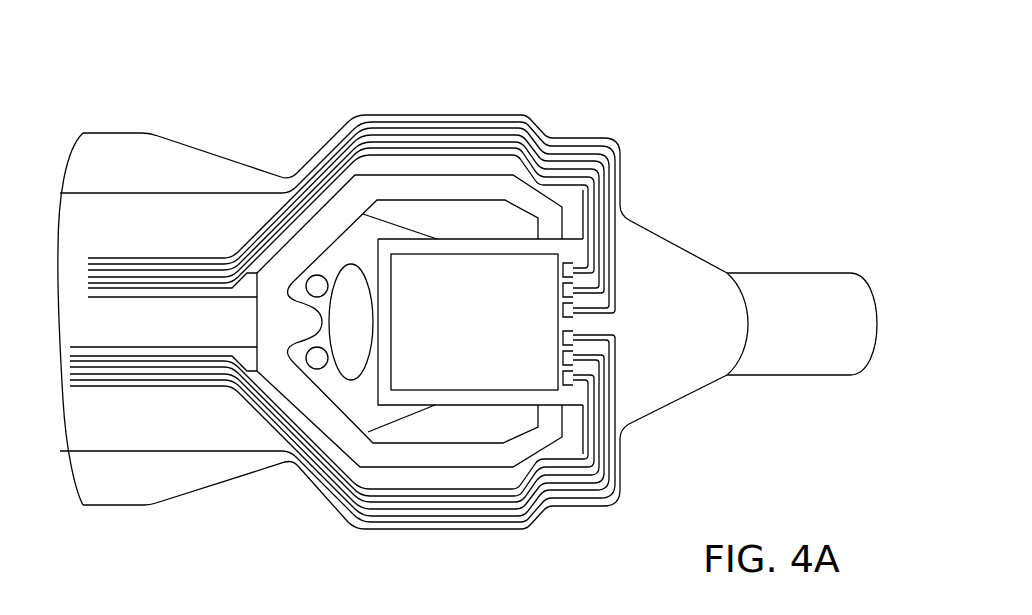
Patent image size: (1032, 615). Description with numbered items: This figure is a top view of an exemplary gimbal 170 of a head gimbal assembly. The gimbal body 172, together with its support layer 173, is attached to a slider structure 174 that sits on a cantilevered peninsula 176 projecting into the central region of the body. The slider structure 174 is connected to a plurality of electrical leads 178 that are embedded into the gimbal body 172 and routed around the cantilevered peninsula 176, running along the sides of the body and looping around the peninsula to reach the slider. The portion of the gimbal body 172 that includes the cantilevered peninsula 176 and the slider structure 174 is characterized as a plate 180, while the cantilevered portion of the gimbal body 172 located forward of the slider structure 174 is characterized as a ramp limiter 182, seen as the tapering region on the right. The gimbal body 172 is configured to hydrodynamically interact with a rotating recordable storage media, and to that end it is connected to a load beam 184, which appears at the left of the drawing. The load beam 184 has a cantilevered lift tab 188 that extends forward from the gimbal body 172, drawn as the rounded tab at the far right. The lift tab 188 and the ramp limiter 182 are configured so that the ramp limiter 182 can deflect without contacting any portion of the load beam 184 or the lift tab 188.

The gimbal 170 is at (467, 316).
The gimbal body 172 is at (521, 232).
The support layer 173 is at (428, 470).
The slider structure 174 is at (506, 392).
The cantilevered peninsula 176 is at (441, 232).
The electrical leads 178 is at (567, 505).
The plate 180 is at (287, 492).
The ramp limiter 182 is at (667, 418).
The load beam 184 is at (212, 488).
The lift tab 188 is at (824, 396).